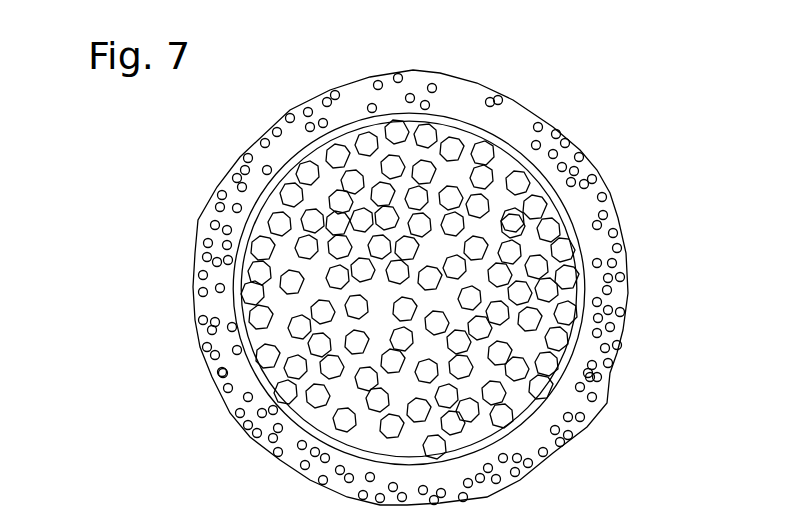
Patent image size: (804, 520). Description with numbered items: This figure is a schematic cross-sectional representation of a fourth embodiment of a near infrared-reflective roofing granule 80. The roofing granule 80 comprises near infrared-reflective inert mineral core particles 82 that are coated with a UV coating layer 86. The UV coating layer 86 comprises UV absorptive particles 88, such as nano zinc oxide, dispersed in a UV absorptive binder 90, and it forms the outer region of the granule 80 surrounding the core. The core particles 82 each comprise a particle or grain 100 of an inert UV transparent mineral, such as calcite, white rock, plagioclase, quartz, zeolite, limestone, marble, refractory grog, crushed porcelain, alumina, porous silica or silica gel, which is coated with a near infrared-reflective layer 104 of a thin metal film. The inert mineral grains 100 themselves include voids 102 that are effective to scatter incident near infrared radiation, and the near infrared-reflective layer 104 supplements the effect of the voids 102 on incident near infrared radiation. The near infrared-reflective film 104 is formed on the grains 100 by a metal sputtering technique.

The near infrared-reflective roofing granule 80 is at (160, 280).
The near infrared-reflective inert mineral core particles 82 is at (262, 212).
The UV coating layer 86 is at (498, 125).
The UV absorptive particles 88 is at (620, 250).
The UV absorptive binder 90 is at (457, 98).
The grain 100 is at (320, 190).
The voids 102 is at (436, 448).
The near infrared-reflective layer 104 is at (542, 412).